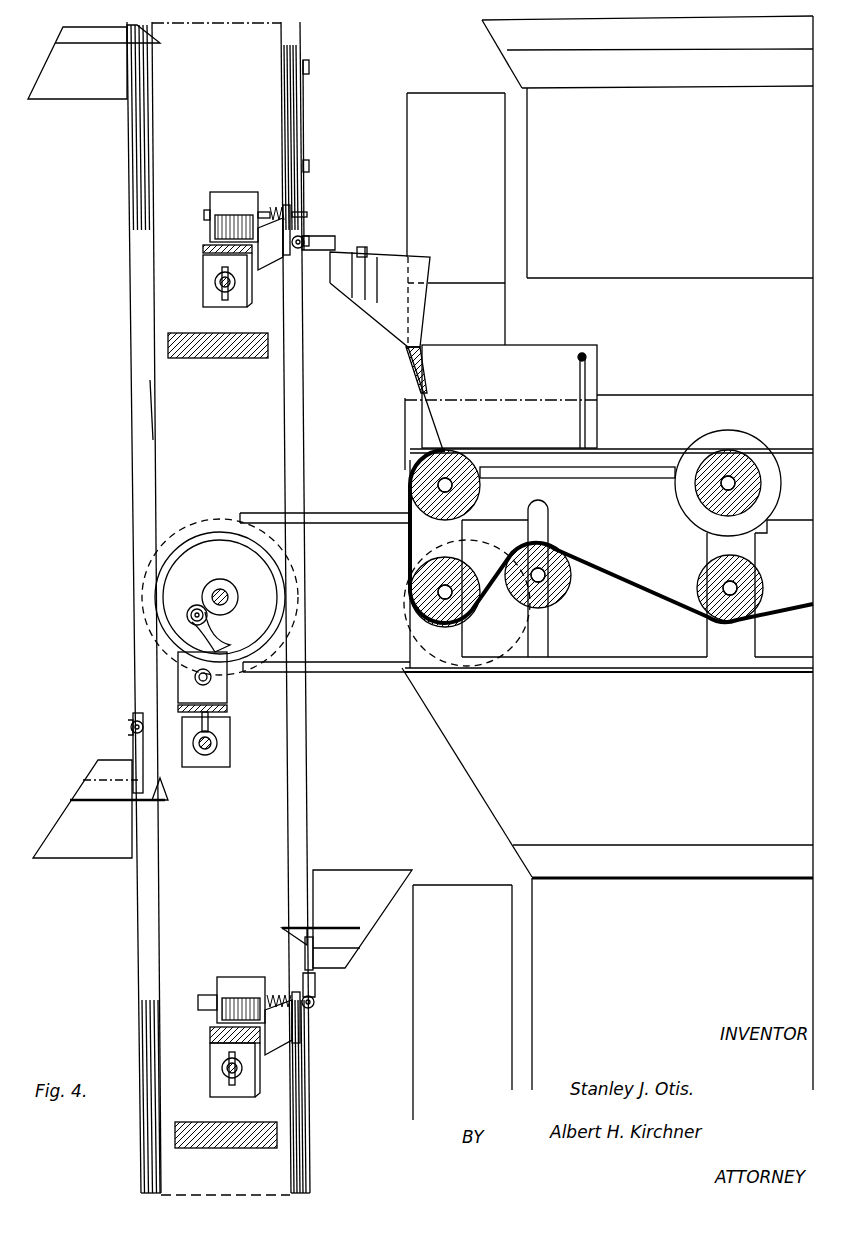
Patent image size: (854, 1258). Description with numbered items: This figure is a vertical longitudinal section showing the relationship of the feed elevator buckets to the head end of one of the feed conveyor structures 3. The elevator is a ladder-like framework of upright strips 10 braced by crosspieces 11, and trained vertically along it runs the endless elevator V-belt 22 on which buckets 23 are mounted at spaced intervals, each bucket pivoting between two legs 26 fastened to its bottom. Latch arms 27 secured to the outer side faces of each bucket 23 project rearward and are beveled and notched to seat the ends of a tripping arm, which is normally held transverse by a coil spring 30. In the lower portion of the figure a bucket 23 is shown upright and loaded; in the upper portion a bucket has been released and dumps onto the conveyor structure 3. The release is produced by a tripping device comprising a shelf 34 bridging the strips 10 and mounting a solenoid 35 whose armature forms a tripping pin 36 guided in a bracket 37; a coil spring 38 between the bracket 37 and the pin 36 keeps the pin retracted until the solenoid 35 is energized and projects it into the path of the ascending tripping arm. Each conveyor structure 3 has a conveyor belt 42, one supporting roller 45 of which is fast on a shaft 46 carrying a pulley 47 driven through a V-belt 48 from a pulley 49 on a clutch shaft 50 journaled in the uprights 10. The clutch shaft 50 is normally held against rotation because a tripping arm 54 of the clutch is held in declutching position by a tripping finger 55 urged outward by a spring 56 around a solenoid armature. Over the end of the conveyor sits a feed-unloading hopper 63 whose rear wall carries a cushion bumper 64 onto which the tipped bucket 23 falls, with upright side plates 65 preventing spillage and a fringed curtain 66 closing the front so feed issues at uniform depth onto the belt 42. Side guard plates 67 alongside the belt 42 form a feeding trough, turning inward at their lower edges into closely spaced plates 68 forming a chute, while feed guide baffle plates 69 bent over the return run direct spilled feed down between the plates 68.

The feed conveyor structure 3 is at (735, 397).
The upright strips 10 is at (168, 412).
The crosspieces 11 is at (200, 358).
The endless elevator V-belt 22 is at (150, 321).
The bucket 23 is at (82, 88).
The legs 26 is at (316, 240).
The latch arms 27 is at (372, 945).
The coil spring 30 is at (306, 168).
The shelf 34 is at (206, 285).
The solenoid 35 is at (212, 197).
The tripping pin 36 is at (305, 212).
The bracket 37 is at (273, 636).
The coil spring 38 is at (279, 205).
The conveyor belt 42 is at (653, 448).
The roller 45 is at (505, 578).
The shaft 46 is at (412, 598).
The pulley 47 is at (378, 580).
The V-belt 48 is at (333, 514).
The pulley 49 is at (185, 535).
The clutch shaft 50 is at (222, 590).
The tripping arm 54 is at (230, 640).
The tripping finger 55 is at (212, 662).
The spring 56 is at (150, 720).
The feed-unloading hopper 63 is at (525, 350).
The cushion bumper 64 is at (425, 375).
The upright side plates 65 is at (432, 100).
The fringed curtain 66 is at (587, 380).
The side guard plates 67 is at (405, 416).
The plates 68 is at (679, 262).
The feed guide baffle plates 69 is at (628, 660).